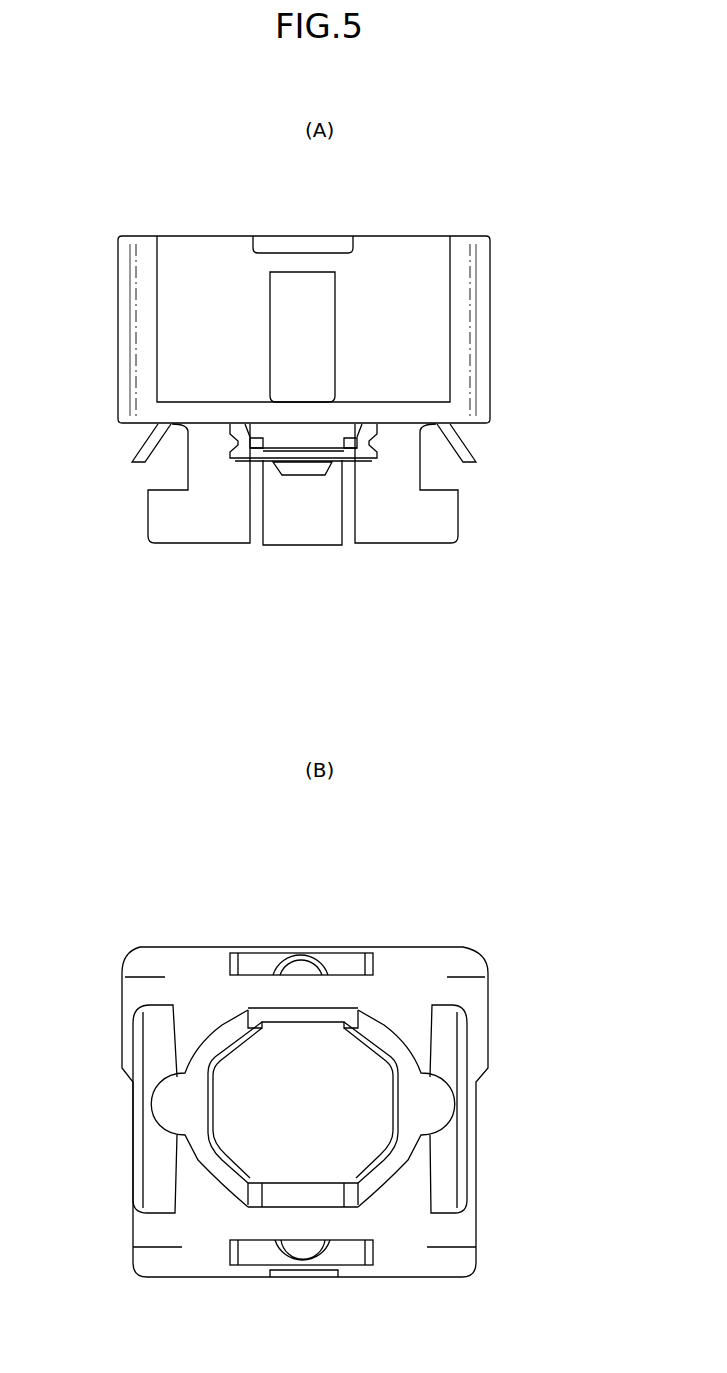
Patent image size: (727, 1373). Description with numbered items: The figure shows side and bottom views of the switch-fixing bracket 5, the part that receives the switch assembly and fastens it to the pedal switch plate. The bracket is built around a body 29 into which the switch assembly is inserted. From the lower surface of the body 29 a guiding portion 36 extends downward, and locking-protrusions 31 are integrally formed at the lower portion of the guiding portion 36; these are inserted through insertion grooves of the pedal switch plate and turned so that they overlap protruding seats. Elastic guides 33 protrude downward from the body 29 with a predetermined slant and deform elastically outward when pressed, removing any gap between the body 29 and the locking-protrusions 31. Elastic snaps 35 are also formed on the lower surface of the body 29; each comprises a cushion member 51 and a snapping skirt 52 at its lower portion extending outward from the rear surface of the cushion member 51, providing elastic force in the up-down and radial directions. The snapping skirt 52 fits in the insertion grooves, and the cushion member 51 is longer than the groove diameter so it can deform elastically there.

The switch-fixing bracket 5 is at (497, 269).
The body 29 is at (485, 327).
The locking-protrusions 31 is at (447, 515).
The elastic guides 33 is at (143, 445).
The elastic snaps 35 is at (295, 481).
The guiding portion 36 is at (227, 551).
The cushion member 51 is at (243, 450).
The snapping skirt 52 is at (313, 470).